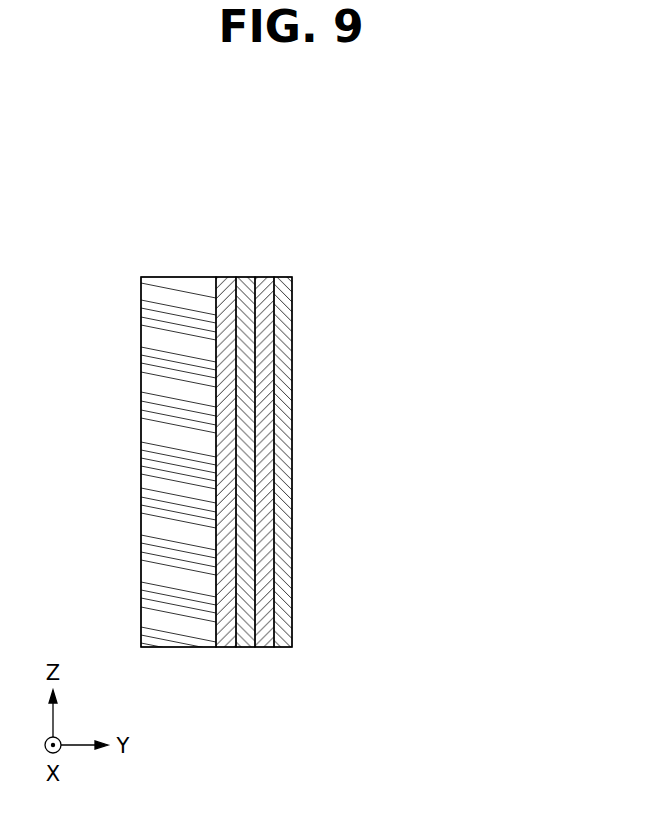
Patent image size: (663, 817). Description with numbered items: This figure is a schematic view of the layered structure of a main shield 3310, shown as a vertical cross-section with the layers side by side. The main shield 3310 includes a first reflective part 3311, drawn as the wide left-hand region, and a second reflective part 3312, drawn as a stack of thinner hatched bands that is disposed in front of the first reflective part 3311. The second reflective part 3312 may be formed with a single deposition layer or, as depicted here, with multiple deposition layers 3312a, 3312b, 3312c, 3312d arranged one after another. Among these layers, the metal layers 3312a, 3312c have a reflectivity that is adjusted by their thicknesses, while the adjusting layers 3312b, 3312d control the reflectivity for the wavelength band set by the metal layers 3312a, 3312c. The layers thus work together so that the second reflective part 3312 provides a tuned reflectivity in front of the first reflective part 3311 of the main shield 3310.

The main shield 3310 is at (344, 467).
The first reflective part 3311 is at (197, 401).
The second reflective part 3312 is at (339, 462).
The metal layer 3312a is at (283, 478).
The adjusting layer 3312b is at (412, 523).
The metal layer 3312c is at (412, 523).
The adjusting layer 3312d is at (412, 523).